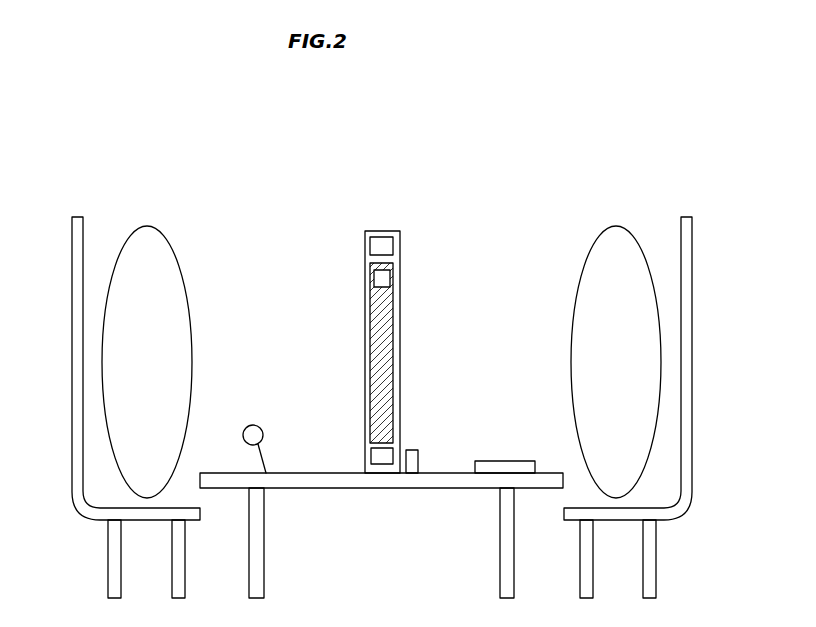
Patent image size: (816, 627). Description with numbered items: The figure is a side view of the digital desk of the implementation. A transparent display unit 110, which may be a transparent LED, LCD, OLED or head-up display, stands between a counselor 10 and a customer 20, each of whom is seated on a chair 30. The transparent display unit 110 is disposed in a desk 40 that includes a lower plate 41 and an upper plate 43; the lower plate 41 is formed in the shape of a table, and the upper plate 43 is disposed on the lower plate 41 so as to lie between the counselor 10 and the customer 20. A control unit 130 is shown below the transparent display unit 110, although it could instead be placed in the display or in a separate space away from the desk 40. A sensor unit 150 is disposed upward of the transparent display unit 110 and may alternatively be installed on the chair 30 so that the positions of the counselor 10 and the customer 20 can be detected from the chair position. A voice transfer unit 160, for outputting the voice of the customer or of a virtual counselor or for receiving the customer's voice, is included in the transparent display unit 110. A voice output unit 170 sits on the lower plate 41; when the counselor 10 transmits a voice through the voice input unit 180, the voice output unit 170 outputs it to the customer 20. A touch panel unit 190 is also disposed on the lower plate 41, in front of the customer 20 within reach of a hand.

The counselor 10 is at (152, 227).
The customer 20 is at (620, 227).
The chair 30 is at (72, 357).
The desk 40 is at (381, 517).
The lower plate 41 is at (297, 488).
The upper plate 43 is at (364, 437).
The transparent display unit 110 is at (375, 333).
The control unit 130 is at (382, 464).
The sensor unit 150 is at (393, 246).
The voice transfer unit 160 is at (390, 278).
The voice output unit 170 is at (411, 450).
The voice input unit 180 is at (258, 424).
The touch panel unit 190 is at (505, 461).